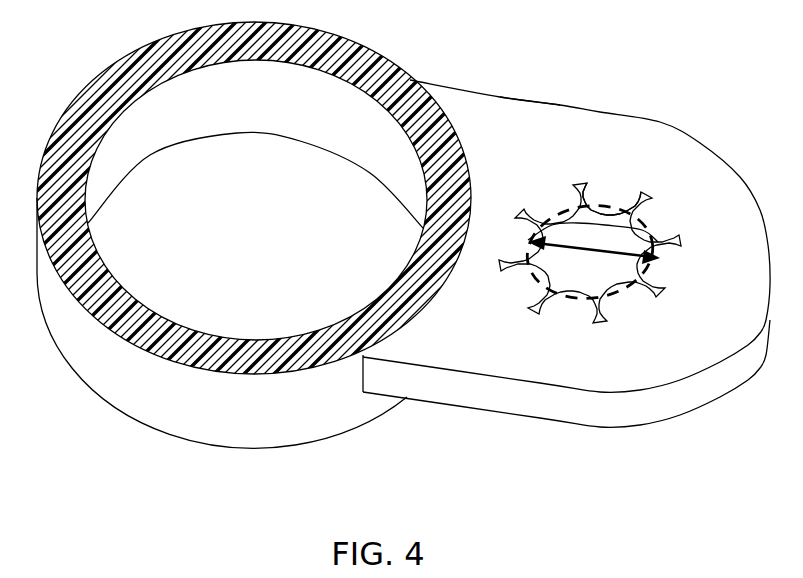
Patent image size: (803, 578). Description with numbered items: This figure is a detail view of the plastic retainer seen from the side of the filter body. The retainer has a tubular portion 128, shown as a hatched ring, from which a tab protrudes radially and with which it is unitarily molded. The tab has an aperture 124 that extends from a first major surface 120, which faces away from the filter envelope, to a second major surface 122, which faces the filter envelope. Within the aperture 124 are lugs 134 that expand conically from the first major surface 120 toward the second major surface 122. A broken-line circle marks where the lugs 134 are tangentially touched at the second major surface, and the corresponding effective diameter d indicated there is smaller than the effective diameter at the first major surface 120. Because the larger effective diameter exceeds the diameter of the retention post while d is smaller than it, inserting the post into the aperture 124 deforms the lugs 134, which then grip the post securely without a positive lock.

The first major surface 120 is at (498, 415).
The second major surface 122 is at (522, 135).
The aperture 124 is at (638, 195).
The tubular portion 128 is at (145, 403).
The lugs 134 is at (605, 197).